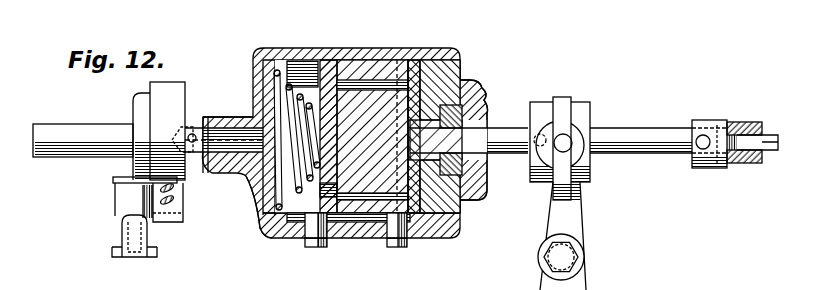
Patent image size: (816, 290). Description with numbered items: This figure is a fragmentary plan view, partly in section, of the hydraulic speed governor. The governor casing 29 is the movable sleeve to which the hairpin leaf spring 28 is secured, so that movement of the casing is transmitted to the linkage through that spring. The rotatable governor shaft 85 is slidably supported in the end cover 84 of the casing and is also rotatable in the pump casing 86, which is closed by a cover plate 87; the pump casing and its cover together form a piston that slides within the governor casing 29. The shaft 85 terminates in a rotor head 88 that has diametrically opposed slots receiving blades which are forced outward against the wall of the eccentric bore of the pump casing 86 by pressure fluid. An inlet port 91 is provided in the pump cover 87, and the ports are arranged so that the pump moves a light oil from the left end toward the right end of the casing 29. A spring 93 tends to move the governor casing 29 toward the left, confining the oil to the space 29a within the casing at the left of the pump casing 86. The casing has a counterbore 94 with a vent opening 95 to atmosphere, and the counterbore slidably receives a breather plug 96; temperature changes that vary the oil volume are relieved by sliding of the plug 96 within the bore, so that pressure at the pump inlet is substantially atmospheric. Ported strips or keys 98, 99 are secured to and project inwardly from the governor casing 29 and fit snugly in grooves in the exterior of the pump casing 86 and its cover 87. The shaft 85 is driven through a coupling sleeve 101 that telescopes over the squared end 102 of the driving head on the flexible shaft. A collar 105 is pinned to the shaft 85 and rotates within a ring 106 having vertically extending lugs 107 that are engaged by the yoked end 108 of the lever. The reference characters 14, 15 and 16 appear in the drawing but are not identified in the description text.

The clearance gap 14 is at (330, 37).
The clearance gap 15 is at (420, 62).
The clearance gap 16 is at (405, 60).
The hairpin leaf spring 28 is at (114, 232).
The governor casing 29 is at (257, 65).
The space 29a is at (268, 216).
The end cover 84 is at (463, 84).
The governor shaft 85 is at (525, 119).
The pump casing 86 is at (365, 68).
The cover plate 87 is at (322, 62).
The rotor head 88 is at (402, 182).
The inlet port 91 is at (270, 231).
The spring 93 is at (278, 83).
The counterbore 94 is at (204, 128).
The vent opening 95 is at (190, 134).
The breather plug 96 is at (239, 147).
The ported strip 98 is at (357, 223).
The ported strip 99 is at (307, 230).
The coupling sleeve 101 is at (710, 124).
The squared end 102 is at (752, 135).
The collar 105 is at (553, 95).
The ring 106 is at (569, 100).
The lugs 107 is at (566, 142).
The yoked end 108 is at (584, 228).